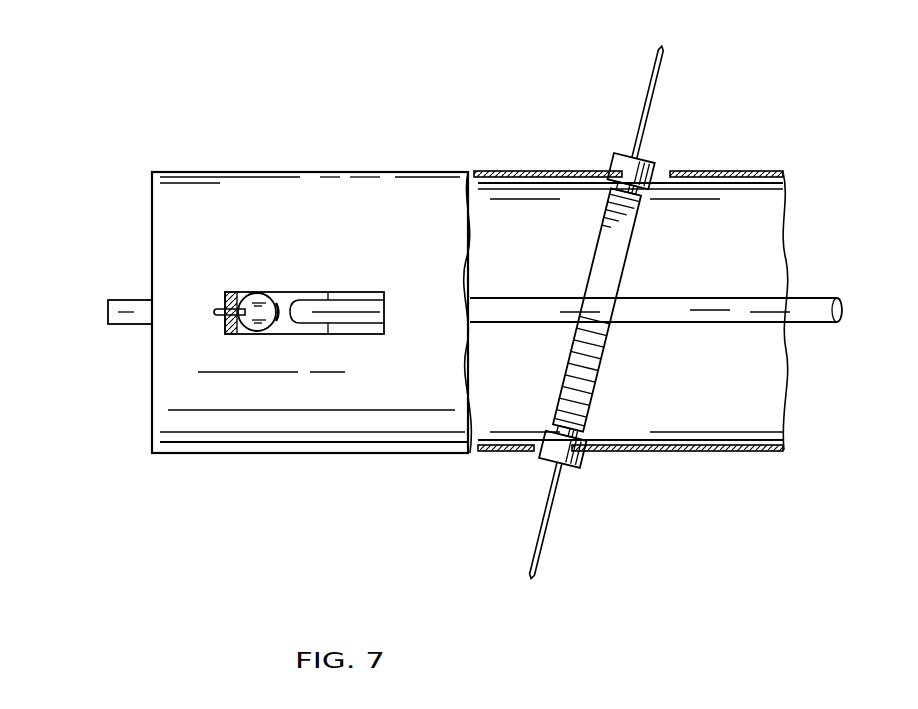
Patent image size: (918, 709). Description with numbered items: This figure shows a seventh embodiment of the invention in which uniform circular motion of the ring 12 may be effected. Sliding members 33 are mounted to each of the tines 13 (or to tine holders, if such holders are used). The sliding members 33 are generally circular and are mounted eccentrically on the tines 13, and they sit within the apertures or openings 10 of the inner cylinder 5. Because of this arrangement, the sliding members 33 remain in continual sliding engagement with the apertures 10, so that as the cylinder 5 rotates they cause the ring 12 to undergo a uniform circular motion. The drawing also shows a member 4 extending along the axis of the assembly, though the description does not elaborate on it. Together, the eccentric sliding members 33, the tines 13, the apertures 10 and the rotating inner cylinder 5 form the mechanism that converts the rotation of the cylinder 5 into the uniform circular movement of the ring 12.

The rod 4 is at (810, 298).
The inner cylinder 5 is at (741, 171).
The apertures 10 is at (544, 170).
The ring 12 is at (621, 268).
The tines 13 is at (657, 64).
The sliding members 33 is at (654, 166).